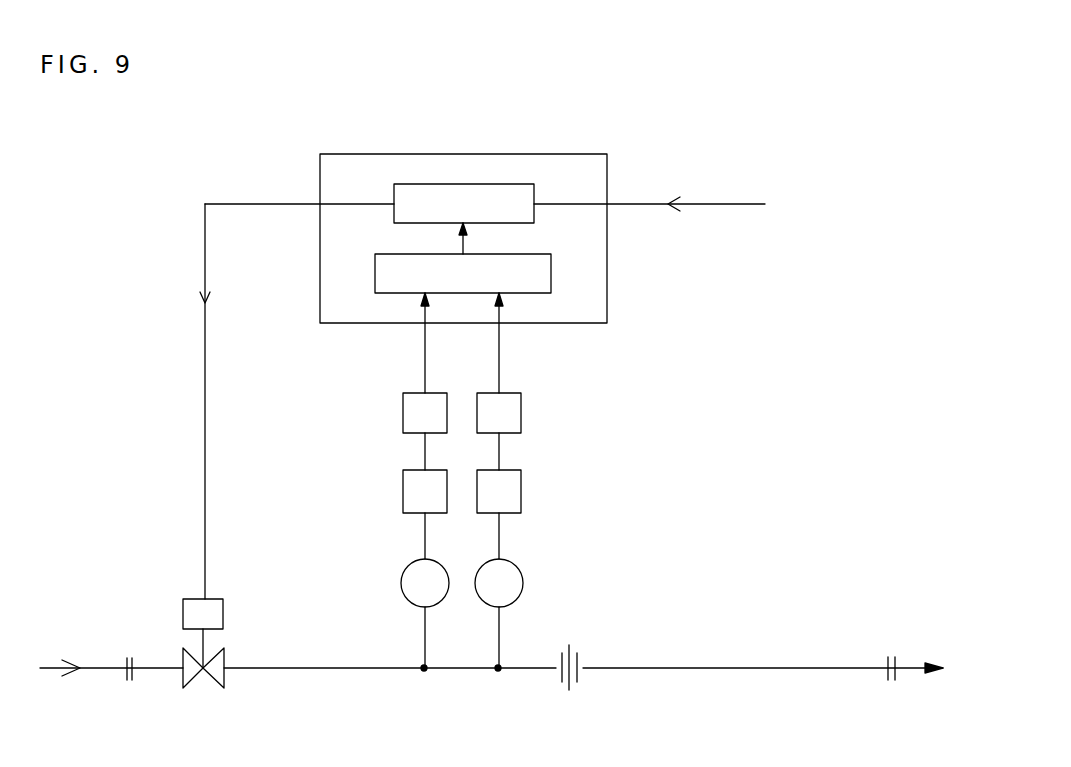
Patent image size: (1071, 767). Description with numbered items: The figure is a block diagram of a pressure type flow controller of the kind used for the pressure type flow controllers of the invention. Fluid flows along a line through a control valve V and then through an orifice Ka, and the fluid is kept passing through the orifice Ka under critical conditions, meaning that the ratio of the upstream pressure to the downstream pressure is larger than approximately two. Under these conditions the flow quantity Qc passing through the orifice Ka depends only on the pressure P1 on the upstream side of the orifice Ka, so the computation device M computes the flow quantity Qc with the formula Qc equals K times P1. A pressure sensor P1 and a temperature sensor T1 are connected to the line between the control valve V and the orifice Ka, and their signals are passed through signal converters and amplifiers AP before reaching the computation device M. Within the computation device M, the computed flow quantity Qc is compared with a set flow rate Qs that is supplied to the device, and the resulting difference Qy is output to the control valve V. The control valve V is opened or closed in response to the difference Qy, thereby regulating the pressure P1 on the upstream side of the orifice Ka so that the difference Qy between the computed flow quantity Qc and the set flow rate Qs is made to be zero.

The computation device M is at (418, 153).
The set flow rate Qs is at (668, 203).
The difference Qy is at (202, 300).
The flow quantity Qc is at (463, 258).
The amplifier AP is at (403, 415).
The pressure on the upstream side of the orifice P1 is at (425, 613).
The temperature sensor T1 is at (499, 613).
The control valve V is at (226, 679).
The orifice Ka is at (569, 691).